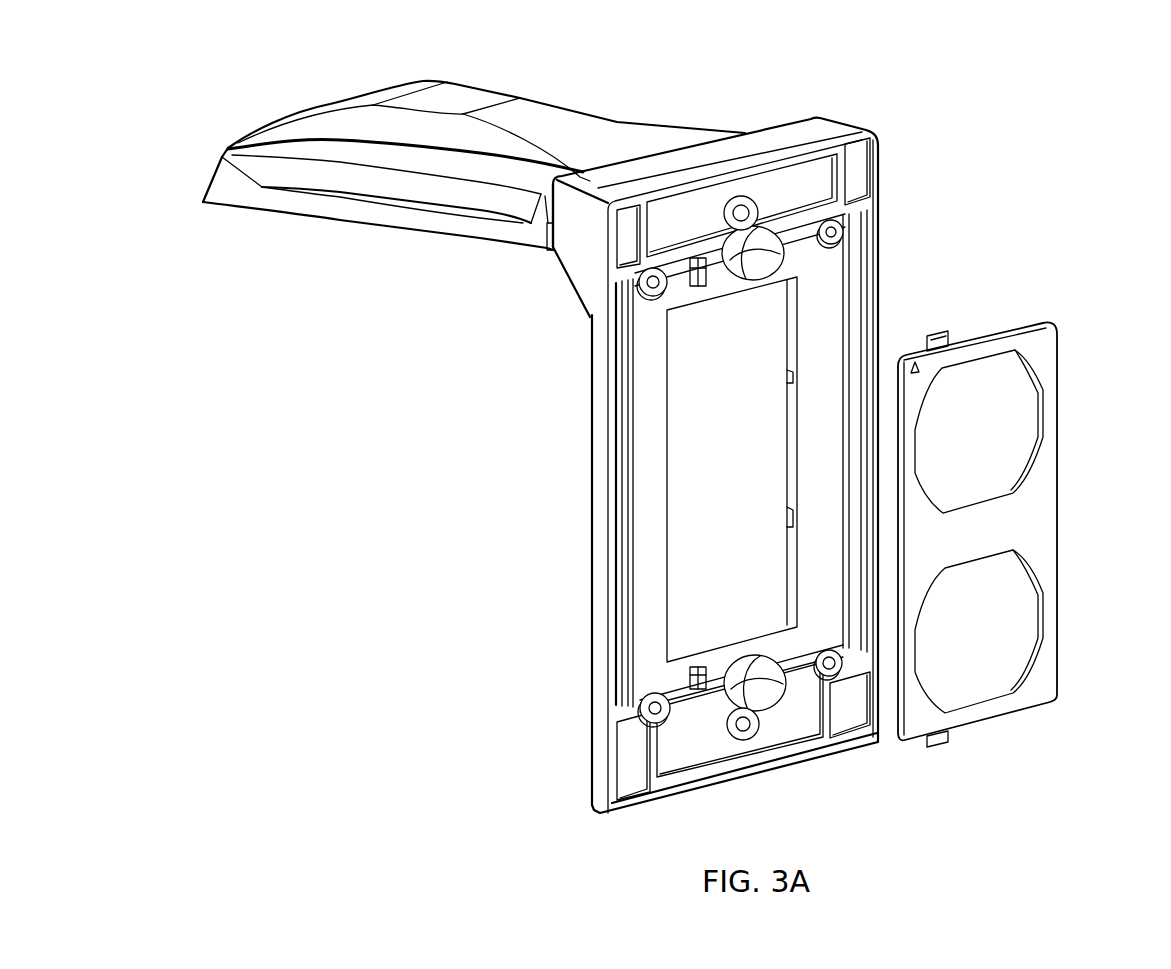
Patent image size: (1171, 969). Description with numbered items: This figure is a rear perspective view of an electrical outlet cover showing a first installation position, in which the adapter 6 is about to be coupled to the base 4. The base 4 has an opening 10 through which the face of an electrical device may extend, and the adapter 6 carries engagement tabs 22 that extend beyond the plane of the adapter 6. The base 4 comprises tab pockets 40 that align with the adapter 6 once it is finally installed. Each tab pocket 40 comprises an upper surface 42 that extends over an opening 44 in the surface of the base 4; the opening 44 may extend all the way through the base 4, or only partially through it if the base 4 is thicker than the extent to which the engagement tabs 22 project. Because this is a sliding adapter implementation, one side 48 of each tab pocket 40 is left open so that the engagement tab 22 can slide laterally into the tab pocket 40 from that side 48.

The base 4 is at (540, 486).
The adapter 6 is at (1021, 531).
The opening 10 is at (732, 469).
The engagement tabs 22 is at (931, 334).
The tab pockets 40 is at (687, 271).
The upper surface 42 is at (714, 683).
The opening 44 is at (729, 730).
The side 48 is at (640, 284).